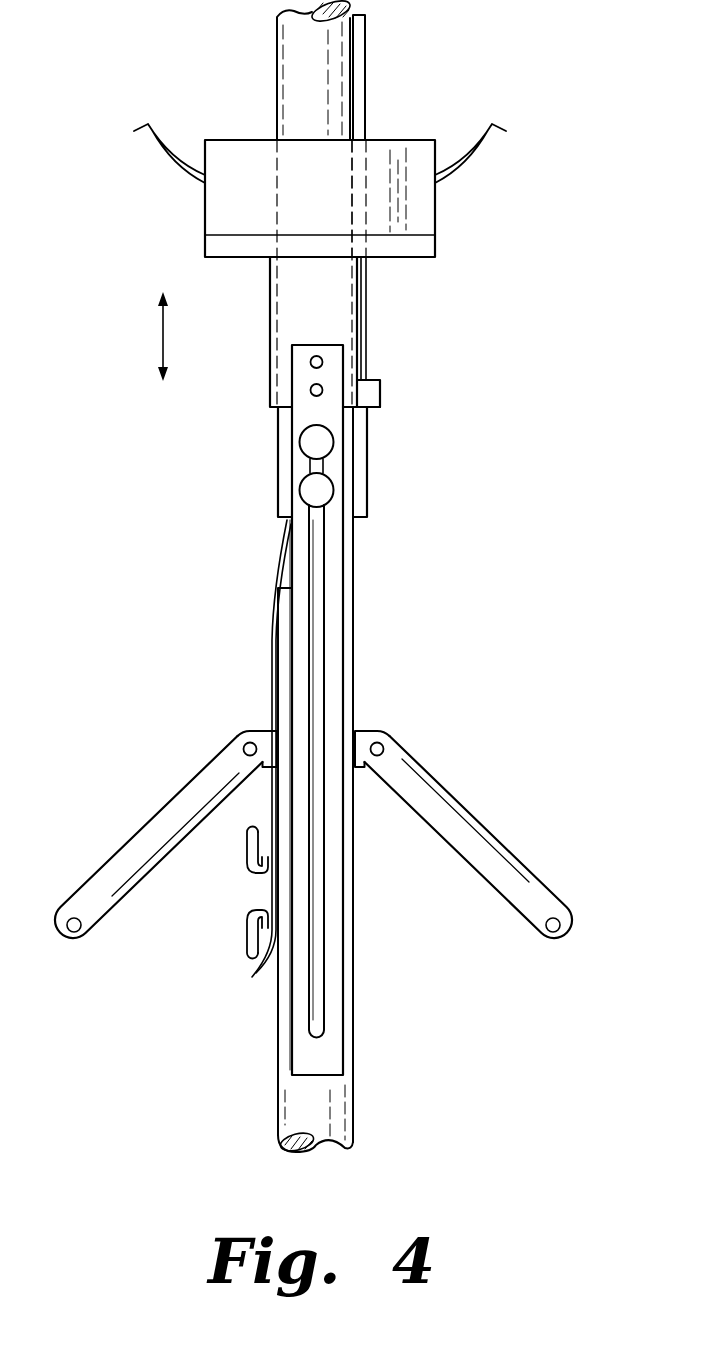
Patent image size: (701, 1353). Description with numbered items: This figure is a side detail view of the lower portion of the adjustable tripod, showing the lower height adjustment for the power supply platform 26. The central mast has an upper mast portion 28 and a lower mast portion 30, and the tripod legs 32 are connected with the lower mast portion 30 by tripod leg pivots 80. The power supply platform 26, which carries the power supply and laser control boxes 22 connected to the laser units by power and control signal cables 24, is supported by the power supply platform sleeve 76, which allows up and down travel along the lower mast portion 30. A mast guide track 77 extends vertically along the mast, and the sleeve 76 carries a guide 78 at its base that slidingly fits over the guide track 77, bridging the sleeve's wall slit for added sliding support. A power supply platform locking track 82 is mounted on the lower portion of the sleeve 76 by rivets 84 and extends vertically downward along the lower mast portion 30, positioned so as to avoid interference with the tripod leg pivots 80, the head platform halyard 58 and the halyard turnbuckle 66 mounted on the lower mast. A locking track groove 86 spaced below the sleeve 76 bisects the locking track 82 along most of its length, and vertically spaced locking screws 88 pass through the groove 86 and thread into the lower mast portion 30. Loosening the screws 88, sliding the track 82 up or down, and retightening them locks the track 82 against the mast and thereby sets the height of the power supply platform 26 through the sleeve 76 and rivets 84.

The power supply and laser control box 22 is at (437, 208).
The power and control signal cable 24 is at (164, 155).
The power supply platform 26 is at (407, 257).
The upper mast portion 28 is at (277, 48).
The lower mast portion 30 is at (354, 1038).
The tripod legs 32 is at (114, 857).
The head platform halyard 58 is at (270, 607).
The halyard turnbuckle 66 is at (247, 930).
The power supply platform sleeve 76 is at (303, 305).
The mast guide track 77 is at (367, 471).
The guide 78 is at (380, 387).
The tripod leg pivots 80 is at (262, 731).
The power supply platform locking track 82 is at (303, 418).
The rivets 84 is at (310, 390).
The locking track groove 86 is at (325, 537).
The locking screws 88 is at (300, 452).